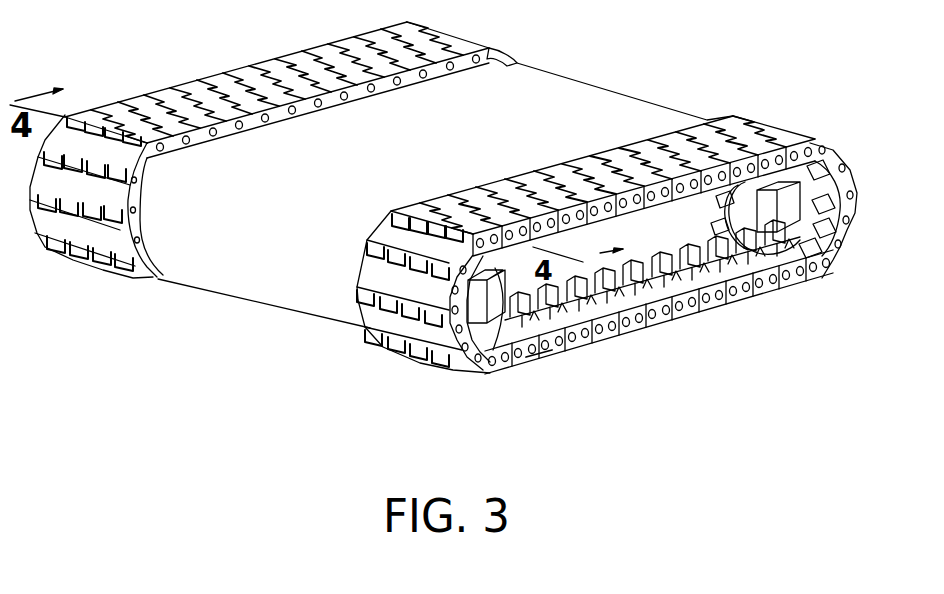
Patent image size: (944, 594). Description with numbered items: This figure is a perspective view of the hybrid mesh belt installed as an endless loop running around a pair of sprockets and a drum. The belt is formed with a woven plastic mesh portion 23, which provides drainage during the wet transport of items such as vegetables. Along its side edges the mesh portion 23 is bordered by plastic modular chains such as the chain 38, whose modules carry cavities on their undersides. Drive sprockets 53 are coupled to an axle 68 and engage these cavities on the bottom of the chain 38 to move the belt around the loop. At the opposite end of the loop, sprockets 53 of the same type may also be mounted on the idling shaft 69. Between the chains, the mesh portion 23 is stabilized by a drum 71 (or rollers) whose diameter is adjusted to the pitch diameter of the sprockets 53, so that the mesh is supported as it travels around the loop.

The mesh portion 23 is at (602, 88).
The chain 38 is at (191, 82).
The drive sprocket 53 is at (490, 368).
The axle 68 is at (788, 208).
The idling shaft 69 is at (547, 353).
The drum 71 is at (673, 308).